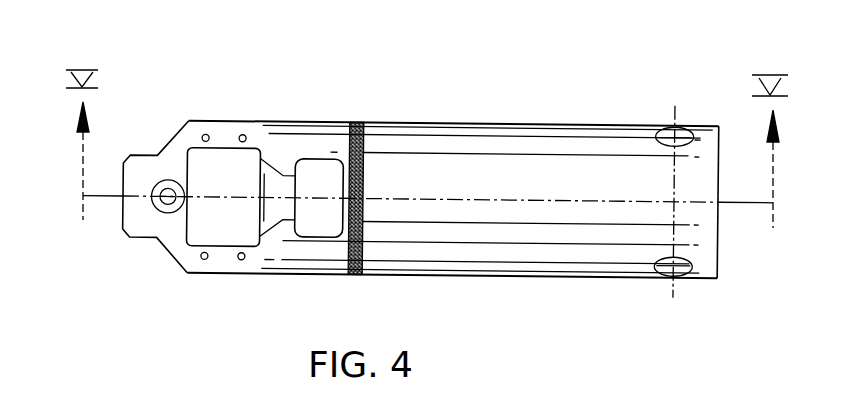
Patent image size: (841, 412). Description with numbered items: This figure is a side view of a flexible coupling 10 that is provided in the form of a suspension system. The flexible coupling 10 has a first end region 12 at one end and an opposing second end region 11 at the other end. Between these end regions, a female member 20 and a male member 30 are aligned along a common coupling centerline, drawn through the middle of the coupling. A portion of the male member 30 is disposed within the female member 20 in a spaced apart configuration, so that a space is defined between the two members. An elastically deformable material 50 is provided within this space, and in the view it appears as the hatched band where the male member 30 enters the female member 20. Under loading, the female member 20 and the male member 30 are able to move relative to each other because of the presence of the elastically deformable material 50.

The flexible coupling 10 is at (154, 258).
The second end region 11 is at (207, 110).
The first end region 12 is at (661, 286).
The female member 20 is at (570, 123).
The male member 30 is at (223, 274).
The elastically deformable material 50 is at (357, 122).